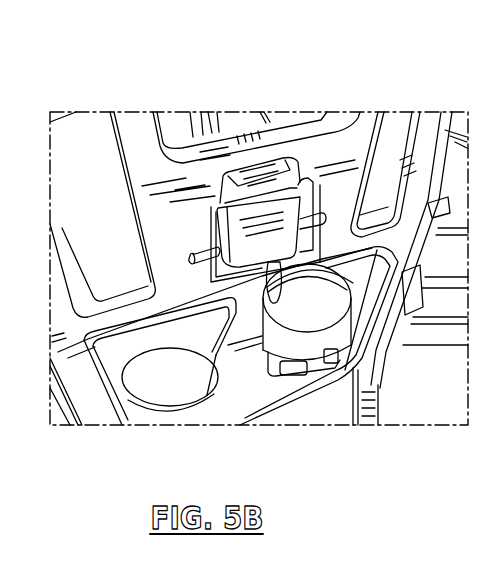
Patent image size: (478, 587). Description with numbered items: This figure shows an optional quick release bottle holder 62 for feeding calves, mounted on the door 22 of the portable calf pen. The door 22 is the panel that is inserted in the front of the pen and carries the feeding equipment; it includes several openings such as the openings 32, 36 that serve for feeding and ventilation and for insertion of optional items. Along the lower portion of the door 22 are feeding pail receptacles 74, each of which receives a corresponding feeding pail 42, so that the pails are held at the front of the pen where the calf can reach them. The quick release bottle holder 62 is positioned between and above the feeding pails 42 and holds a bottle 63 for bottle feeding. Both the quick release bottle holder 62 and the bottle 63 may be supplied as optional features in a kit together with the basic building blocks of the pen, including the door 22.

The door 22 is at (147, 130).
The opening 32 is at (387, 140).
The opening 36 is at (95, 175).
The feeding pail 42 is at (170, 367).
The quick release bottle holder 62 is at (190, 246).
The bottle 63 is at (232, 122).
The feeding pail receptacle 74 is at (117, 388).